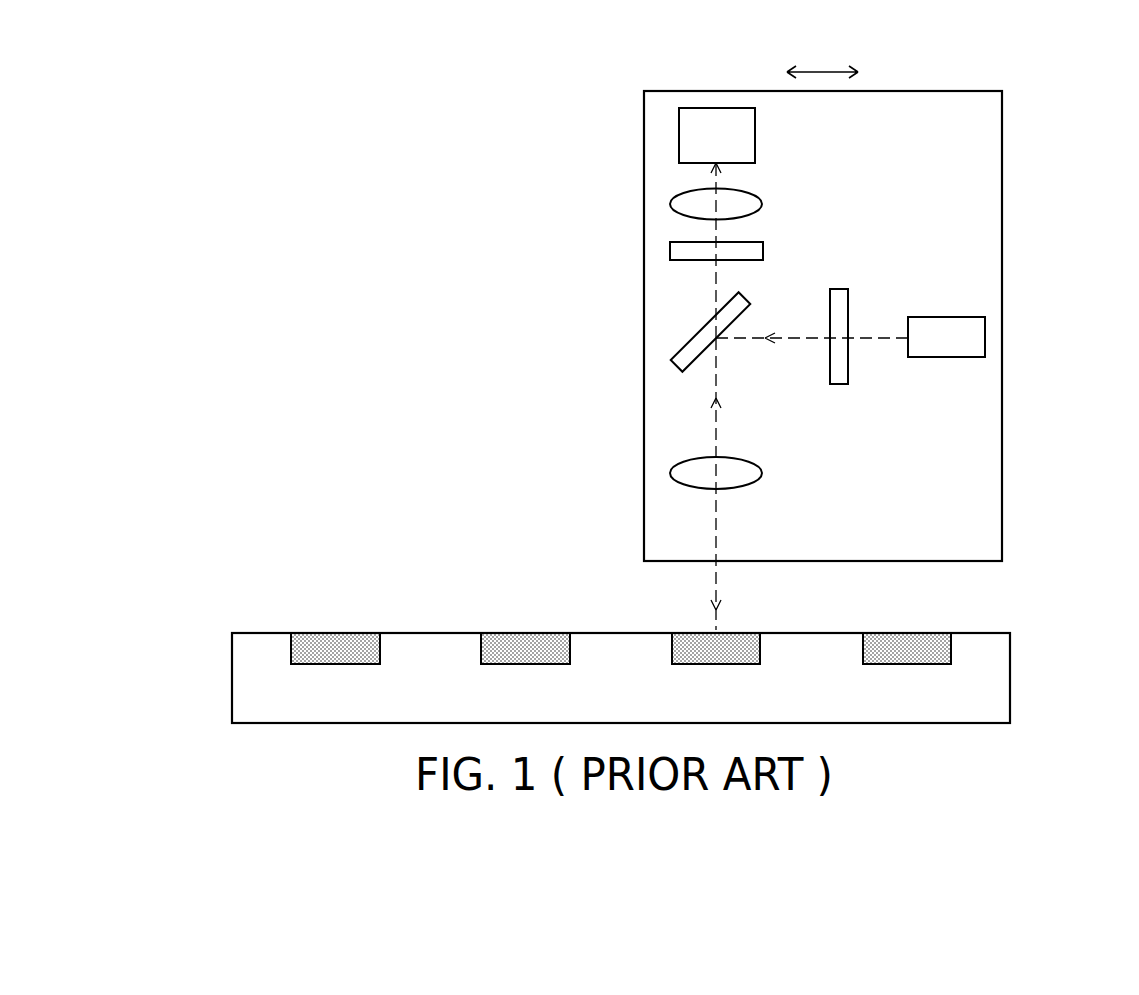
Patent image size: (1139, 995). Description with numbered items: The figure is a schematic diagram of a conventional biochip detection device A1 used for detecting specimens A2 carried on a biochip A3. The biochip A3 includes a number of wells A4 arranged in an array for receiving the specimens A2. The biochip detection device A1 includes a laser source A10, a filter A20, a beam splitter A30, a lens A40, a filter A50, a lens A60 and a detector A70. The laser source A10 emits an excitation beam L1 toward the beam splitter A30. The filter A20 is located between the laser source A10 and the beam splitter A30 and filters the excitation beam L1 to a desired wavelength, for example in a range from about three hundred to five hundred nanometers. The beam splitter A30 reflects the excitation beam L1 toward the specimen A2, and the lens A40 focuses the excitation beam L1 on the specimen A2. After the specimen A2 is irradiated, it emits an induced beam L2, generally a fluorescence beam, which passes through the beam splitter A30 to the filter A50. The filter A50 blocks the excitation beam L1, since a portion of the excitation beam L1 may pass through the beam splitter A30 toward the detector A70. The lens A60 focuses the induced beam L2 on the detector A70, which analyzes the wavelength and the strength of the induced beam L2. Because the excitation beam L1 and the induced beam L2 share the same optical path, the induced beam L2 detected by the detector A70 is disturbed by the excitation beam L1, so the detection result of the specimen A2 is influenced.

The biochip detection device A1 is at (1024, 87).
The specimen A2 is at (335, 640).
The biochip A3 is at (1021, 680).
The well A4 is at (672, 648).
The laser source A10 is at (952, 303).
The filter A20 is at (850, 279).
The beam splitter A30 is at (757, 290).
The lens A40 is at (670, 473).
The filter A50 is at (670, 251).
The lens A60 is at (670, 204).
The detector A70 is at (679, 134).
The excitation beam L1 is at (879, 337).
The induced beam L2 is at (716, 291).